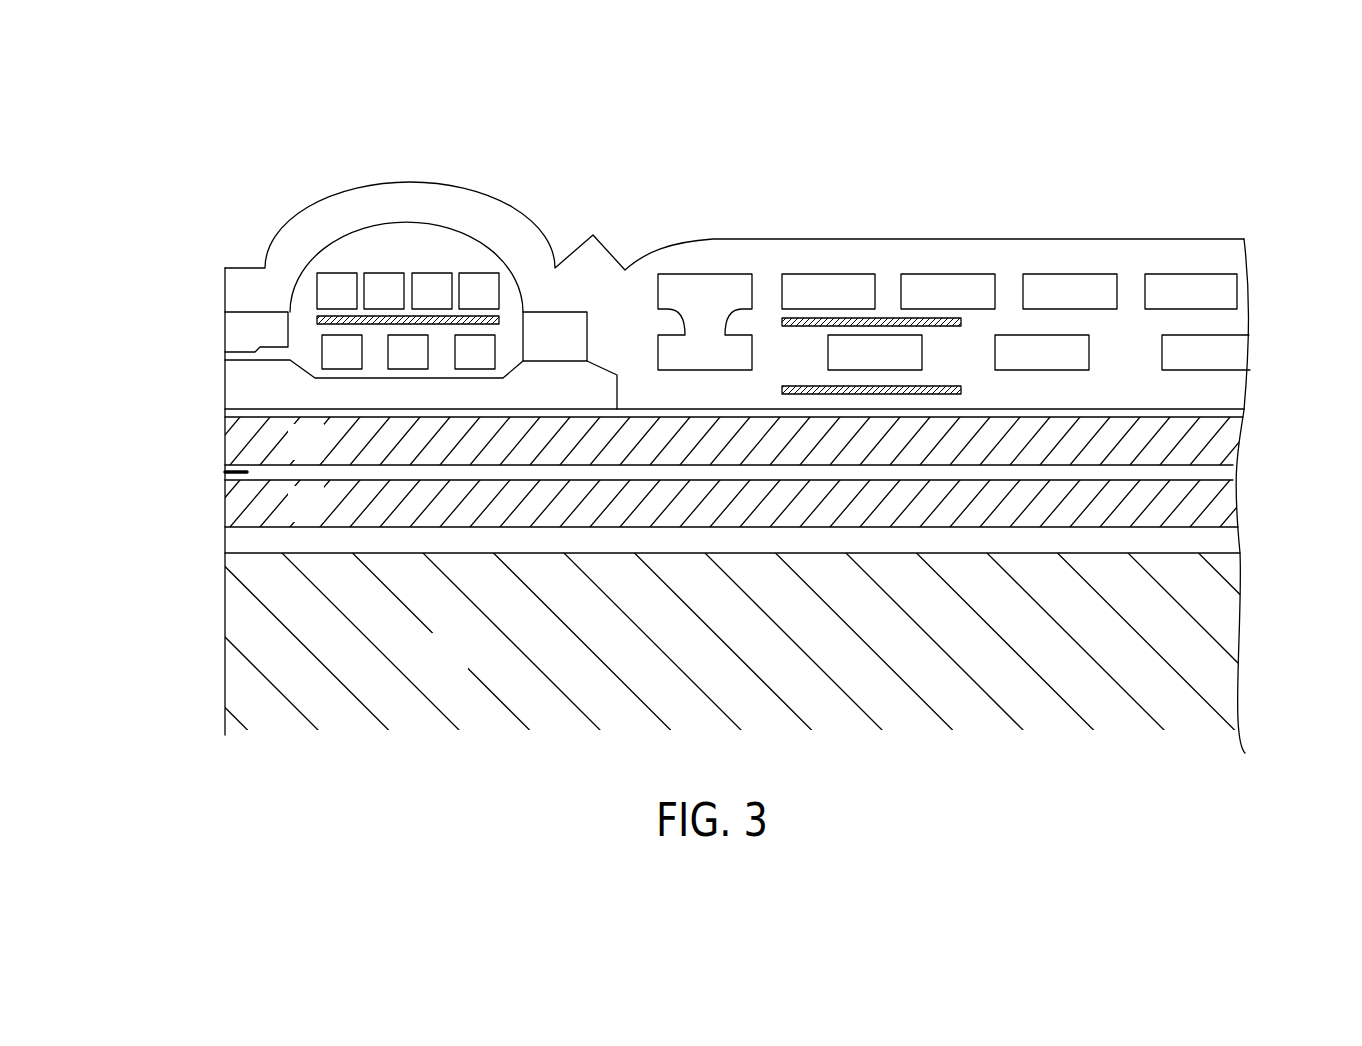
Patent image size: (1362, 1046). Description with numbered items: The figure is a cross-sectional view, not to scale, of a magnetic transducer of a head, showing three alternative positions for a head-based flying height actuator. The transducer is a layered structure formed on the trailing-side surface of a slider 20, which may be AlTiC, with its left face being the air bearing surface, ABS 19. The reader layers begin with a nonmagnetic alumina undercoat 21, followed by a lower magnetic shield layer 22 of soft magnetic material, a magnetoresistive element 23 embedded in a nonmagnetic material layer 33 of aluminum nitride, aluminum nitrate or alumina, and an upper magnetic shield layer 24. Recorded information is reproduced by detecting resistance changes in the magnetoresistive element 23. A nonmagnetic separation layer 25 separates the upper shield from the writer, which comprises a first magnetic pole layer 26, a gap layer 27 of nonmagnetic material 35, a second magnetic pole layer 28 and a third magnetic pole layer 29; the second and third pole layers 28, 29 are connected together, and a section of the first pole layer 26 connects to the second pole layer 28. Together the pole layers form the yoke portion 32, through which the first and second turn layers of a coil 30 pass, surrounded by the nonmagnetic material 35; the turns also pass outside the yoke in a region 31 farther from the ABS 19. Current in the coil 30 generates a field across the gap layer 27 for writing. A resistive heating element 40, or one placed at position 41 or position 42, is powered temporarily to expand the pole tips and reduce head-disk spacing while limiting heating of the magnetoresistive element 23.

The ABS 19 is at (224, 727).
The slider 20 is at (433, 665).
The undercoat 21 is at (233, 541).
The lower magnetic shield layer 22 is at (223, 502).
The magnetoresistive element 23 is at (223, 468).
The upper magnetic shield layer 24 is at (223, 438).
The separation layer 25 is at (223, 412).
The first magnetic pole layer 26 is at (223, 384).
The gap layer 27 is at (223, 354).
The second magnetic pole layer 28 is at (223, 331).
The third magnetic pole layer 29 is at (223, 291).
The coil 30 is at (1215, 293).
The region 31 is at (652, 167).
The yoke portion 32 is at (292, 163).
The nonmagnetic material layer 33 is at (709, 472).
The nonmagnetic material 35 is at (393, 262).
The resistive heating element 40 is at (318, 320).
The alternative resistive heating element position 41 is at (780, 320).
The alternative resistive heating element position 42 is at (963, 390).